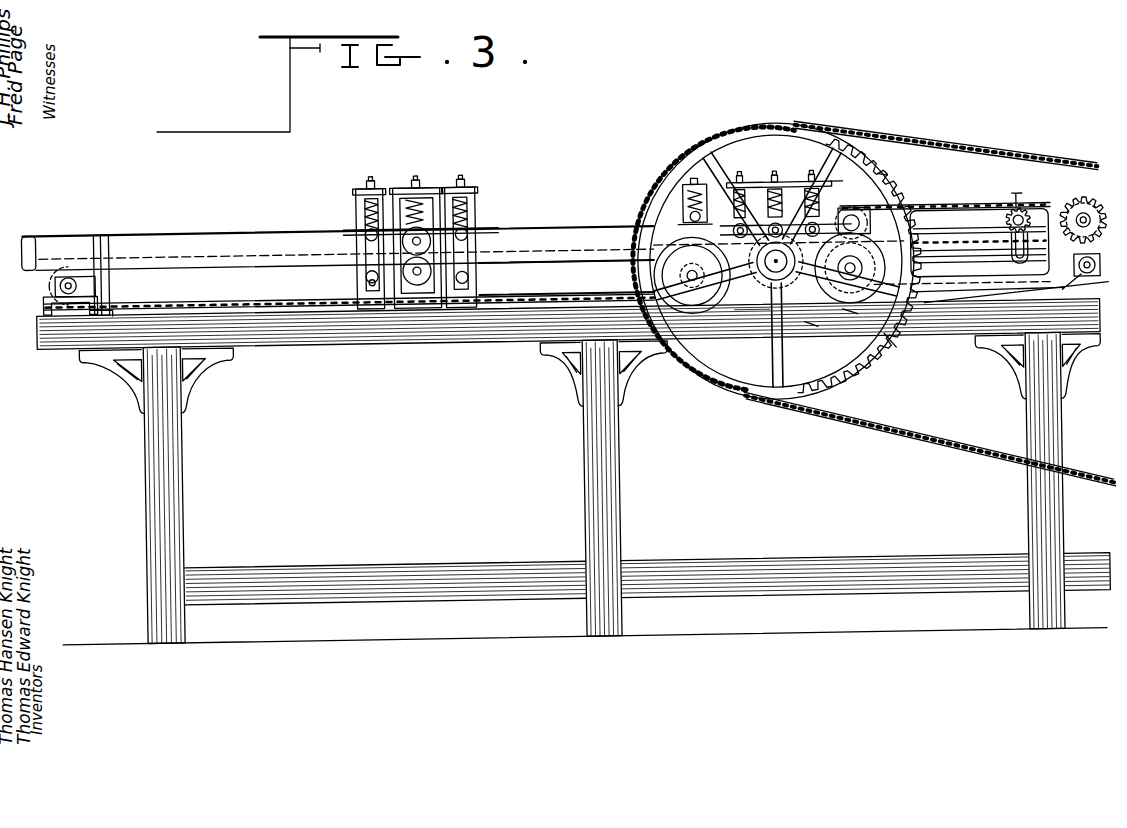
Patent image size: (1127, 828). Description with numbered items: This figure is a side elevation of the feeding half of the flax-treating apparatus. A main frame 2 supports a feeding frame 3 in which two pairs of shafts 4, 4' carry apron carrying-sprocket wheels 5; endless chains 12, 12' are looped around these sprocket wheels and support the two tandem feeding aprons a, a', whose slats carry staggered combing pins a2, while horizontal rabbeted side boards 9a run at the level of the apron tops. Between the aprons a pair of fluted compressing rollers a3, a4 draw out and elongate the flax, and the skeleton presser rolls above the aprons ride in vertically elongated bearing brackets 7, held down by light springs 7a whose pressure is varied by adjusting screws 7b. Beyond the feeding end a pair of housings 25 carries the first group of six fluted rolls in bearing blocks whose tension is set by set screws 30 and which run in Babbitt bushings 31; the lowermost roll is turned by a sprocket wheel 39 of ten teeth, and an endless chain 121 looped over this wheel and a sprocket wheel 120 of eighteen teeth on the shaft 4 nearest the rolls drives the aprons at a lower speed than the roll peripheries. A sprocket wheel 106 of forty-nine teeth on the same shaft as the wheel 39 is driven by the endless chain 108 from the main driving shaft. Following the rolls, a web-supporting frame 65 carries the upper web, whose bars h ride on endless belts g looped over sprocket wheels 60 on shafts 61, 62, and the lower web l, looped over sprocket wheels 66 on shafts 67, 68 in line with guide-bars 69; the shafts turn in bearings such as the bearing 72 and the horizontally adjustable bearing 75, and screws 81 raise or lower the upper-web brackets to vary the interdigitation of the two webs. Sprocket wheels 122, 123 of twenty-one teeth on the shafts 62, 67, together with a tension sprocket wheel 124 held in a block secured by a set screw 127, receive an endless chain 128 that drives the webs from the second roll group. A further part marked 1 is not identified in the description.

The roller 1 is at (372, 282).
The main frame 2 is at (80, 343).
The feeding frame 3 is at (106, 232).
The shaft 4 is at (51, 309).
The apron carrying-sprocket wheel 5 is at (50, 270).
The bearing bracket 7 is at (358, 190).
The spring 7a is at (365, 233).
The adjusting screw 7b is at (373, 175).
The side board 9a is at (470, 241).
The endless chain 12 is at (349, 285).
The endless chain 12' is at (567, 277).
The housing 25 is at (812, 330).
The set screw 30 is at (758, 185).
The Babbitt bushing 31 is at (722, 232).
The sprocket wheel 39 is at (742, 338).
The sprocket wheel 60 is at (854, 220).
The shaft 61 is at (885, 178).
The shaft 62 is at (1078, 222).
The web-supporting frame 65 is at (897, 352).
The sprocket wheel 66 is at (850, 318).
The shaft 67 is at (851, 278).
The shaft 68 is at (1087, 283).
The guide-bar 69 is at (968, 258).
The bearing 72 is at (838, 185).
The bearing 75 is at (1068, 300).
The screw 81 is at (880, 210).
The sprocket wheel 106 is at (722, 385).
The endless chain 108 is at (935, 445).
The sprocket wheel 120 is at (678, 312).
The endless chain 121 is at (700, 300).
The sprocket wheel 122 is at (866, 391).
The sprocket wheel 123 is at (1083, 206).
The tension sprocket wheel 124 is at (1018, 213).
The set screw 127 is at (1020, 200).
The endless chain 128 is at (1010, 297).
The apron a is at (337, 234).
The apron a' is at (344, 234).
The combing pin a2 is at (290, 303).
The fluted compressing roller a3 is at (425, 308).
The fluted compressing roller a4 is at (430, 188).
The shaft 4' is at (566, 274).
The endless belt g is at (935, 218).
The bar of upper web h is at (1018, 240).
The lower web l is at (955, 250).